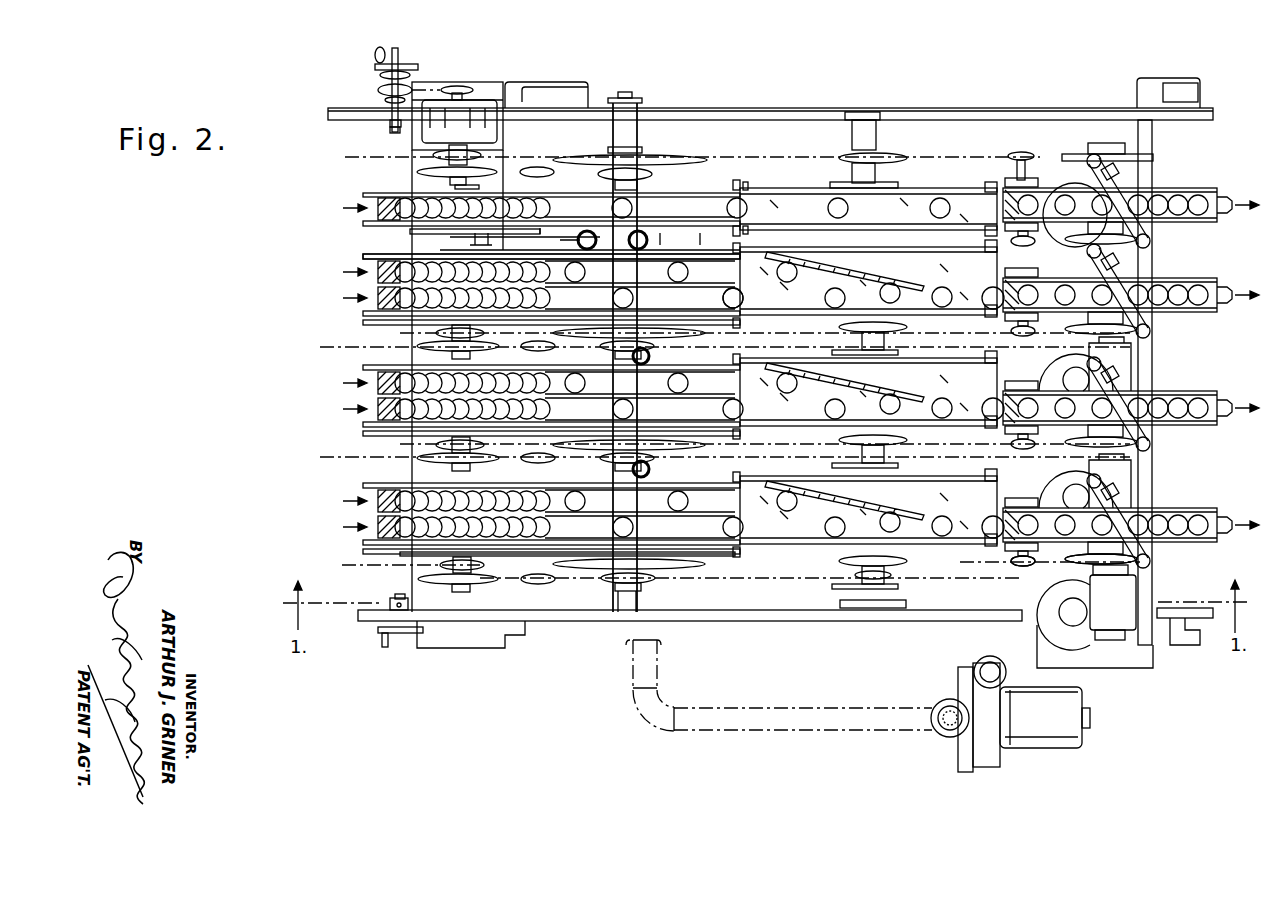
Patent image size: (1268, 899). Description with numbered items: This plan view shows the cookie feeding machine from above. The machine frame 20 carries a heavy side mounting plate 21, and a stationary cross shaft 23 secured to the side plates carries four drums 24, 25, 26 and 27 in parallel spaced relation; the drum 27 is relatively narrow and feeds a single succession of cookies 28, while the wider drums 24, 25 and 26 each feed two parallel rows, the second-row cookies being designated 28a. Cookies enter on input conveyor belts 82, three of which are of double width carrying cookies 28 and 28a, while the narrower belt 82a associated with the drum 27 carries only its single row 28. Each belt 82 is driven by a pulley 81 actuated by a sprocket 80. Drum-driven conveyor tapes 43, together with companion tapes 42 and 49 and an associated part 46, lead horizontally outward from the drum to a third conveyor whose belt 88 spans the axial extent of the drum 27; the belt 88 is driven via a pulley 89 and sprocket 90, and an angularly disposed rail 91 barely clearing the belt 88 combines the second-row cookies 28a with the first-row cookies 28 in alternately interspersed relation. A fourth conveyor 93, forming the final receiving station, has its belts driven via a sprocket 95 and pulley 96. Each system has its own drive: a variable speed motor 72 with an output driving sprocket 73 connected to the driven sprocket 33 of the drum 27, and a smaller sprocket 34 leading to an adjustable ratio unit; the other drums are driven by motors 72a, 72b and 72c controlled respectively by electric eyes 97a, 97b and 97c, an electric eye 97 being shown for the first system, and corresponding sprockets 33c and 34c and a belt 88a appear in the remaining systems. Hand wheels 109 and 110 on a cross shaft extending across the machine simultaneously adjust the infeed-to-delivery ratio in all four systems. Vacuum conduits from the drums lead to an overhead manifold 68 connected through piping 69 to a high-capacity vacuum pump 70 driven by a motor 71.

The hand wheel 110 is at (388, 66).
The machine frame 20 is at (548, 82).
The side mounting plate 21 is at (700, 108).
The sprocket 33c is at (600, 155).
The sprocket 34c is at (652, 168).
The drum 27 is at (715, 185).
The upper guide plate 88a is at (766, 188).
The product articles 28 is at (405, 205).
The fourth conveyor 93 is at (1030, 201).
The electric eye 97c is at (1143, 173).
The narrower belt 82a is at (372, 205).
The second row cookies 28a is at (395, 256).
The input conveyor belt 82 is at (365, 272).
The conveyor tape 42 is at (660, 258).
The drum 26 is at (690, 258).
The conveyor tape 49 is at (738, 286).
The rail 91 is at (818, 262).
The belt 88 is at (930, 262).
The motor 72c is at (1060, 236).
The electric eye 97b is at (1143, 277).
The drum 25 is at (656, 346).
The conveyor tape 43 is at (712, 342).
The motor 72b is at (1060, 350).
The electric eye 97a is at (1143, 389).
The drum 24 is at (715, 488).
The motor 72a is at (1060, 465).
The discharge conveyor 97 is at (1145, 497).
The sprocket 80 is at (425, 554).
The pulley 81 is at (450, 586).
The smaller sprocket 34 is at (605, 581).
The driven sprocket 33 is at (668, 571).
The shaft 46 is at (726, 561).
The pulley 89 is at (815, 579).
The sprocket 90 is at (838, 580).
The sprocket 95 is at (1010, 573).
The pulley 96 is at (1048, 571).
The output driving sprocket 73 is at (1030, 616).
The variable speed motor 72 is at (1068, 646).
The stationary cross shaft 23 is at (618, 612).
The overhead manifold 68 is at (630, 666).
The hand wheel 109 is at (410, 646).
The piping 69 is at (813, 713).
The vacuum pump 70 is at (985, 773).
The motor 71 is at (1045, 746).